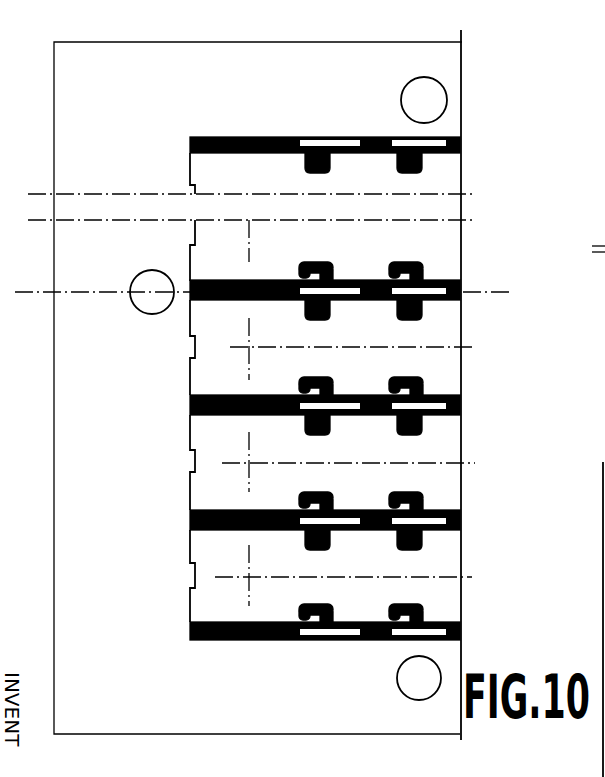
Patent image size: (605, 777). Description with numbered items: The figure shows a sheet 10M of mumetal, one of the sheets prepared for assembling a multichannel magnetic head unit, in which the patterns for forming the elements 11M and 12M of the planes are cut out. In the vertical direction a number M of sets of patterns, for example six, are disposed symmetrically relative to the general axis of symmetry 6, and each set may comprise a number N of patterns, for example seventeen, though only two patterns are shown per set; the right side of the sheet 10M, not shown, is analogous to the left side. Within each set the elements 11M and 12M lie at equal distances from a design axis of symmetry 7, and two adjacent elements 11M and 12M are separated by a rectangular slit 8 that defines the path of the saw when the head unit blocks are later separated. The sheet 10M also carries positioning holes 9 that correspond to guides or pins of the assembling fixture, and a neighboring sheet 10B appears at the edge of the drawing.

The general axis of symmetry 6 is at (31, 291).
The design axis of symmetry 7 is at (466, 463).
The slit 8 is at (437, 406).
The positioning holes 9 is at (447, 93).
The sheet 10M is at (54, 530).
The frame wall 10B is at (603, 552).
The element 11M is at (404, 433).
The element 12M is at (400, 392).